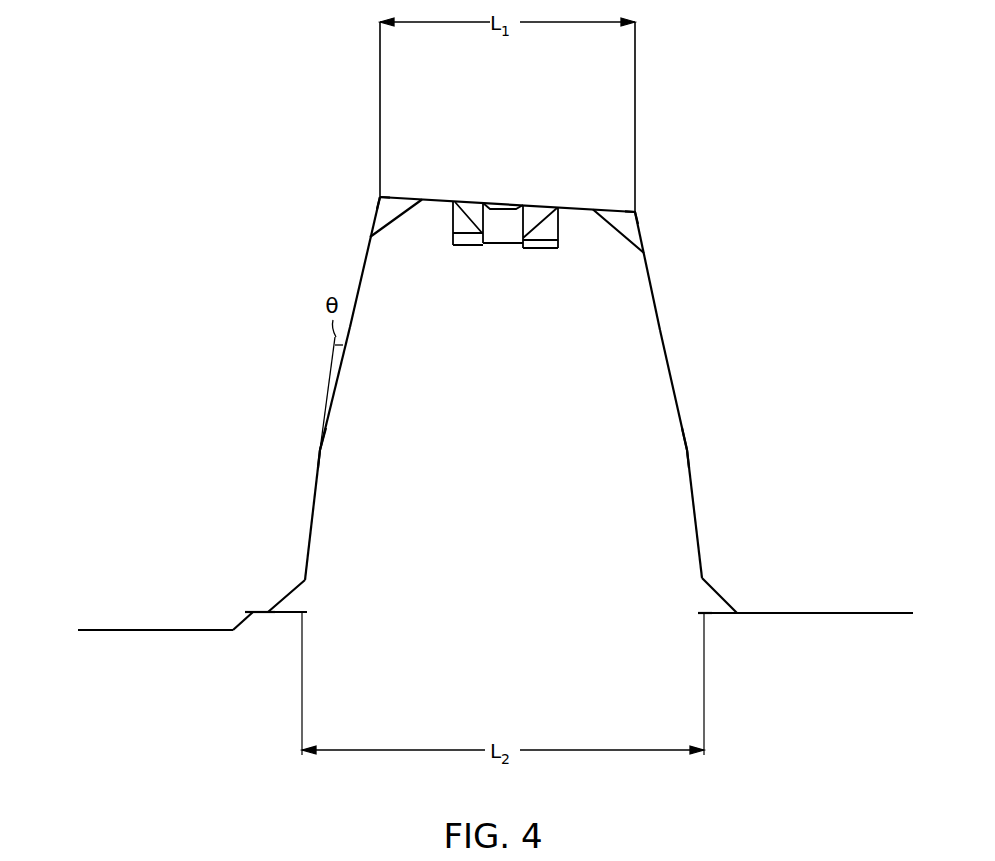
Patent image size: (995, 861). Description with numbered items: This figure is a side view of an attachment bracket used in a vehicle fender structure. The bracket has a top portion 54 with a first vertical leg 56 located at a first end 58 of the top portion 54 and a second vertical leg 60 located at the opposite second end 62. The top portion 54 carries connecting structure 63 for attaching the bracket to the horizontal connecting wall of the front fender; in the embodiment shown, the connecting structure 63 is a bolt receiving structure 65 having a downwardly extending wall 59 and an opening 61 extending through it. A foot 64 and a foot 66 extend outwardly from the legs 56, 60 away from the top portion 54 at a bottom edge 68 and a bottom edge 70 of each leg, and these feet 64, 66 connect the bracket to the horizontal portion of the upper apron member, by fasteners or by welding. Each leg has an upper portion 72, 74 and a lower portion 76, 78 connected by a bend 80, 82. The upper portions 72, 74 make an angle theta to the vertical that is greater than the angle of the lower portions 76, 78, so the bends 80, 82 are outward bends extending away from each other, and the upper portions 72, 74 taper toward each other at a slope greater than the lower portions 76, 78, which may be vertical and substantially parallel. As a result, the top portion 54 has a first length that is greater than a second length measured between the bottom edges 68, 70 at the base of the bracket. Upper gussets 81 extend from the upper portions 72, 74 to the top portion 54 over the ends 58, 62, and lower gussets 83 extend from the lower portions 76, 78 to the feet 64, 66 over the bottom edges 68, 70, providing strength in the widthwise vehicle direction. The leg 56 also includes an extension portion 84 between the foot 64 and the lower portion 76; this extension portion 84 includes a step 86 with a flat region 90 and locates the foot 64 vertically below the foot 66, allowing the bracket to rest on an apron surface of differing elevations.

The top portion 54 is at (587, 208).
The first vertical leg 56 is at (352, 336).
The first end 58 is at (382, 193).
The downwardly extending wall 59 is at (449, 228).
The second vertical leg 60 is at (658, 335).
The opening 61 is at (508, 230).
The second end 62 is at (637, 208).
The connecting structure 63 is at (503, 219).
The foot 64 is at (167, 632).
The bolt receiving structure 65 is at (558, 235).
The foot 66 is at (802, 617).
The bottom edge 68 is at (308, 612).
The bottom edge 70 is at (698, 613).
The upper portion 72 is at (367, 252).
The upper portion 74 is at (658, 303).
The lower portion 76 is at (312, 498).
The lower portion 78 is at (695, 498).
The bend 80 is at (319, 448).
The upper gusset 81 is at (398, 207).
The bend 82 is at (688, 451).
The lower gusset 83 is at (298, 602).
The extension portion 84 is at (272, 615).
The step 86 is at (242, 620).
The flat region 90 is at (262, 612).